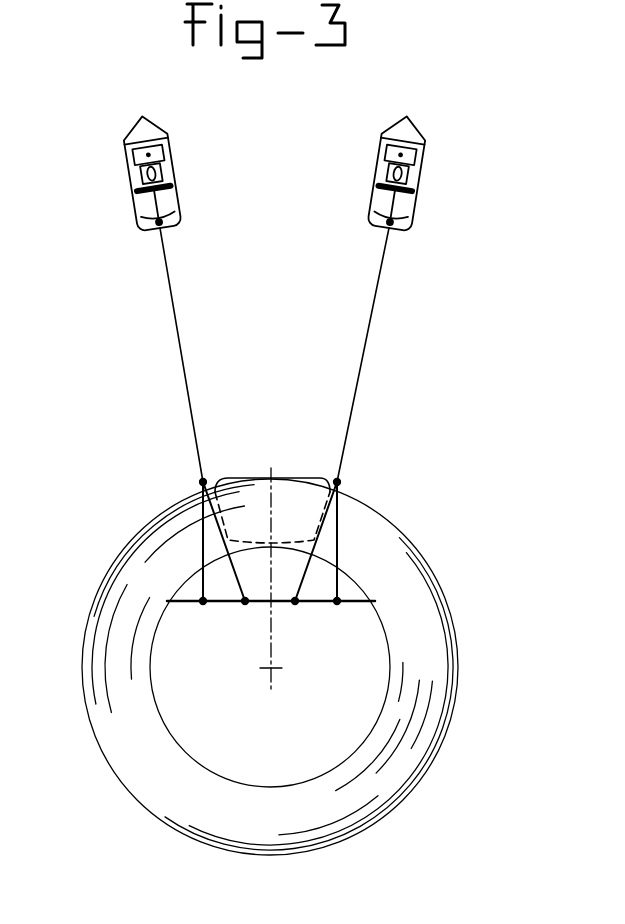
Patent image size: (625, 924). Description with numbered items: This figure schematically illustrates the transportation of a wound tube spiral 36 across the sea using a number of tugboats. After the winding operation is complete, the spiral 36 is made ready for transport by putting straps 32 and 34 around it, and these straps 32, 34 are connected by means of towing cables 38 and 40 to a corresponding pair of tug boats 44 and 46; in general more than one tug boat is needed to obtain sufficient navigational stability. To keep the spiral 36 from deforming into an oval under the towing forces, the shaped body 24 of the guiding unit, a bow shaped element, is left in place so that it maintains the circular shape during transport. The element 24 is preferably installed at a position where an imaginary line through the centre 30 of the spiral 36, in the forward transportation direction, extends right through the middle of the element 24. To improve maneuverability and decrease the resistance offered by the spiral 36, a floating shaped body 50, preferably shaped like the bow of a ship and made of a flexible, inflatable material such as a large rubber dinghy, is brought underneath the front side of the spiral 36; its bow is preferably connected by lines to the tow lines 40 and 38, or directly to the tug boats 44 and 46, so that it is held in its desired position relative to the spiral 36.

The guiding means 24 is at (259, 595).
The centre 30 is at (274, 673).
The strap 32 is at (340, 527).
The strap 34 is at (243, 507).
The spiral 36 is at (442, 657).
The towing cable 38 is at (362, 371).
The towing cable 40 is at (177, 345).
The tug boat 44 is at (422, 172).
The tug boat 46 is at (124, 160).
The floating shaped body 50 is at (235, 478).